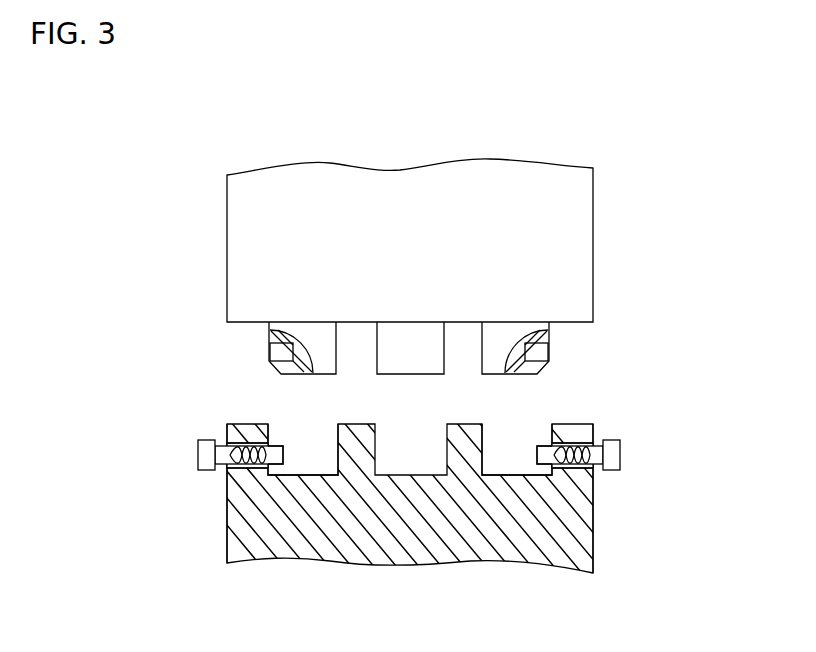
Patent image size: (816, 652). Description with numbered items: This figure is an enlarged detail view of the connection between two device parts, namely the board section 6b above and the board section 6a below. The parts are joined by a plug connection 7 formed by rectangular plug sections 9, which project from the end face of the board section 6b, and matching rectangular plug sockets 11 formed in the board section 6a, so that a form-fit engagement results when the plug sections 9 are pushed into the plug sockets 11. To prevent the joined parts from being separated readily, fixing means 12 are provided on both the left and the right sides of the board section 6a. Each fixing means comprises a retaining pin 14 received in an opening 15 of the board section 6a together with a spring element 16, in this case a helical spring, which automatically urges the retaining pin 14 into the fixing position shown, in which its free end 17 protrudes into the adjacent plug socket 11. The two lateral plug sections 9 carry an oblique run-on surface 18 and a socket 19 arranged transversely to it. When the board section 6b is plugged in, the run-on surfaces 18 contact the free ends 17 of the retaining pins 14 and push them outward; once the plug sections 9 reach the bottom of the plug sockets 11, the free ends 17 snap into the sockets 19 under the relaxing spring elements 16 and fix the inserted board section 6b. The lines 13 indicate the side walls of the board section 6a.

The board section 6b is at (593, 220).
The board section 6a is at (425, 548).
The plug connection 7 is at (217, 342).
The plug section 9 is at (340, 340).
The socket 19 is at (269, 350).
The run-on surface 18 is at (269, 364).
The fixing means 12 is at (217, 383).
The retaining pin 14 is at (218, 474).
The free end 17 is at (277, 470).
The opening 15 is at (243, 474).
The spring element 16 is at (238, 490).
The side wall 13 is at (227, 547).
The plug socket 11 is at (305, 472).